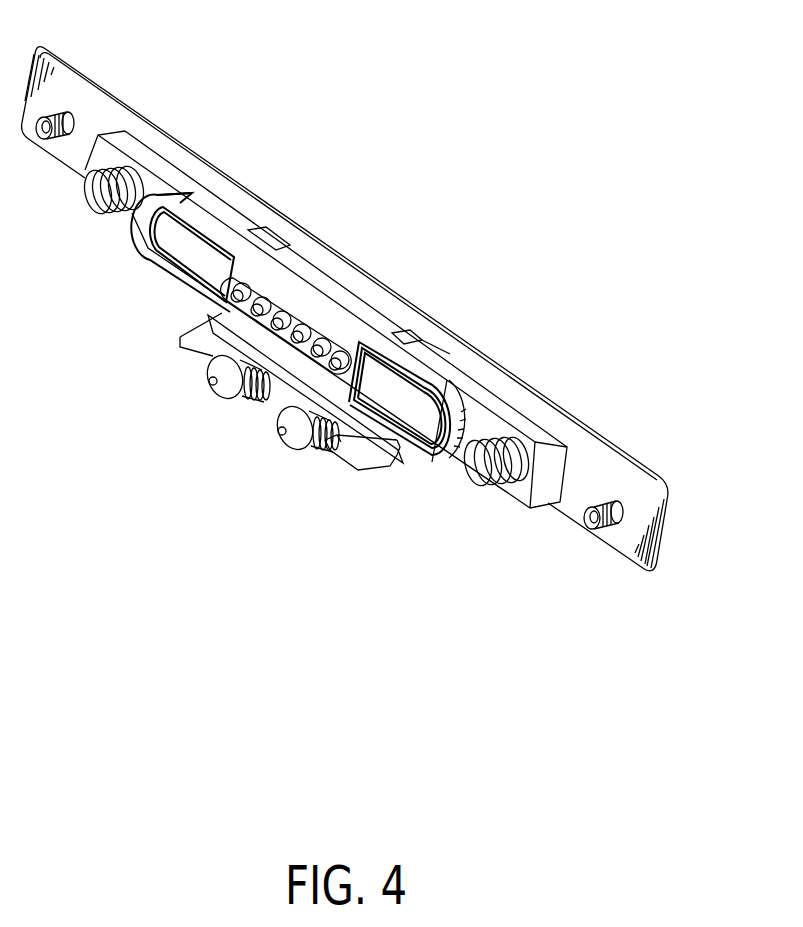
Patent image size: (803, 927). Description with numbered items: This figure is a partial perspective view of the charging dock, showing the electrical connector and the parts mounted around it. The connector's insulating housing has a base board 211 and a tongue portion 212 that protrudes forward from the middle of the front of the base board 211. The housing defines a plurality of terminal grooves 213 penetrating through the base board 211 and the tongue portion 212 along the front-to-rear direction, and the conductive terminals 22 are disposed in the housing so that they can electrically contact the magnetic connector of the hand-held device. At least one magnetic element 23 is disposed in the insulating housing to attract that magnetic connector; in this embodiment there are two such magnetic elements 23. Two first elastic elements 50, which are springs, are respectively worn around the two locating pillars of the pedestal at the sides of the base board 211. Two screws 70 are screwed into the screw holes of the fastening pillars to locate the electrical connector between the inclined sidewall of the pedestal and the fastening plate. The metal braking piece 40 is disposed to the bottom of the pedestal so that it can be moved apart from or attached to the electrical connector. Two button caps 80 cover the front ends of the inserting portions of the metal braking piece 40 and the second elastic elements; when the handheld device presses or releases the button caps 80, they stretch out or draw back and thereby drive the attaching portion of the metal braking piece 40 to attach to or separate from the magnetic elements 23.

The screw 70 is at (67, 112).
The first elastic element 50 is at (97, 203).
The button cap 80 is at (212, 385).
The conductive terminal 22 is at (338, 364).
The terminal groove 213 is at (343, 356).
The base board 211 is at (438, 370).
The tongue portion 212 is at (452, 411).
The magnetic element 23 is at (401, 404).
The metal braking piece 40 is at (350, 457).